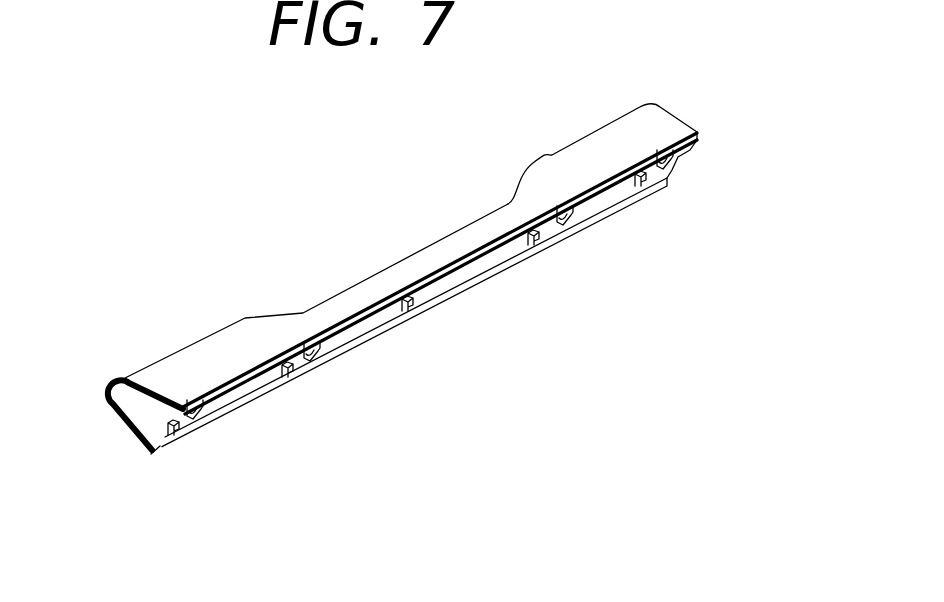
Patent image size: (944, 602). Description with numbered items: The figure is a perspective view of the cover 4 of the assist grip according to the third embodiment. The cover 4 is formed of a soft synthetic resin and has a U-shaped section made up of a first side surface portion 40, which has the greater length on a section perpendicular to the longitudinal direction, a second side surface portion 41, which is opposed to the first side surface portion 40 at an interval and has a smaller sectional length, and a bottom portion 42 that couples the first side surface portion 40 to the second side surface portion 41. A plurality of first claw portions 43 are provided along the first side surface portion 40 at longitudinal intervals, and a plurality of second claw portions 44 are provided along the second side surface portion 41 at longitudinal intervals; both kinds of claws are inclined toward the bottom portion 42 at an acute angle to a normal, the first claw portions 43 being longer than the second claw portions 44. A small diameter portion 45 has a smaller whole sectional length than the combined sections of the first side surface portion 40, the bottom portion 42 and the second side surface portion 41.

The cover 4 is at (632, 125).
The first side surface portion 40 is at (236, 336).
The second side surface portion 41 is at (140, 426).
The bottom portion 42 is at (120, 384).
The first claw portion 43 is at (201, 422).
The second claw portion 44 is at (179, 437).
The small diameter portion 45 is at (427, 245).